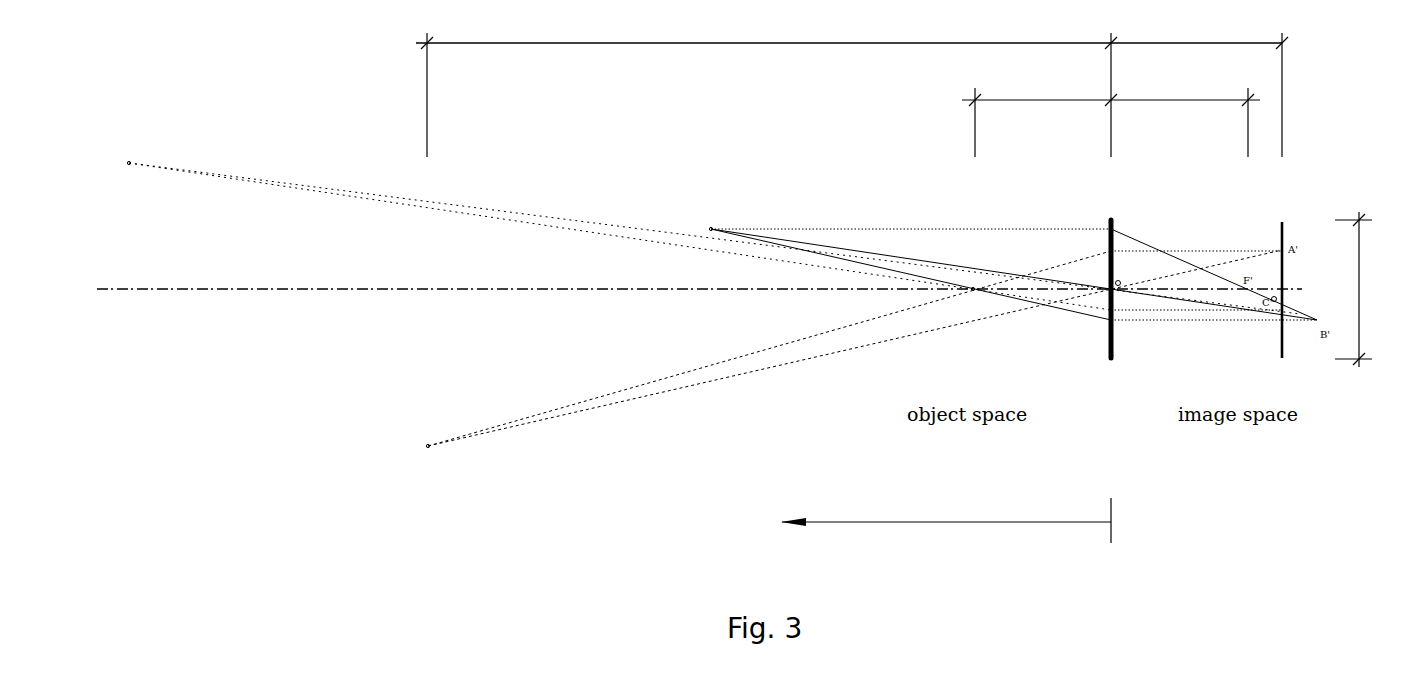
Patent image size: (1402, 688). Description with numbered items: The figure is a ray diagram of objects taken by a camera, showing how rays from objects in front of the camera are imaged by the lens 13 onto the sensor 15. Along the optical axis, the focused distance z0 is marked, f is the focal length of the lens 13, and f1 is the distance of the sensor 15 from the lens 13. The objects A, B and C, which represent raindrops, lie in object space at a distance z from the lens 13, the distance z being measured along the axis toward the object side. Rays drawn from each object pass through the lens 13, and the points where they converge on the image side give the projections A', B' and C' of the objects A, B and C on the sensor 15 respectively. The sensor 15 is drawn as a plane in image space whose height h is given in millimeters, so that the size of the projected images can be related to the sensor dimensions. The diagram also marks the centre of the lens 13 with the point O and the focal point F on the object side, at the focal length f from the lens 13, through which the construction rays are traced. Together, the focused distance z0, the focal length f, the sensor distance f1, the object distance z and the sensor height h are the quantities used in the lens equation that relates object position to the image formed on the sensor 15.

The lens 13 is at (1112, 380).
The sensor 15 is at (1282, 204).
The object A is at (422, 442).
The object B is at (706, 222).
The object C is at (122, 157).
The object-side focal point F is at (969, 296).
The optical center of lens O is at (1117, 284).
The sensor height h is at (1354, 289).
The distance of the object z is at (946, 520).
The focused distance z0 is at (852, 91).
The focal length f is at (1111, 114).
The distance of the sensor from the lens f1 is at (1193, 26).